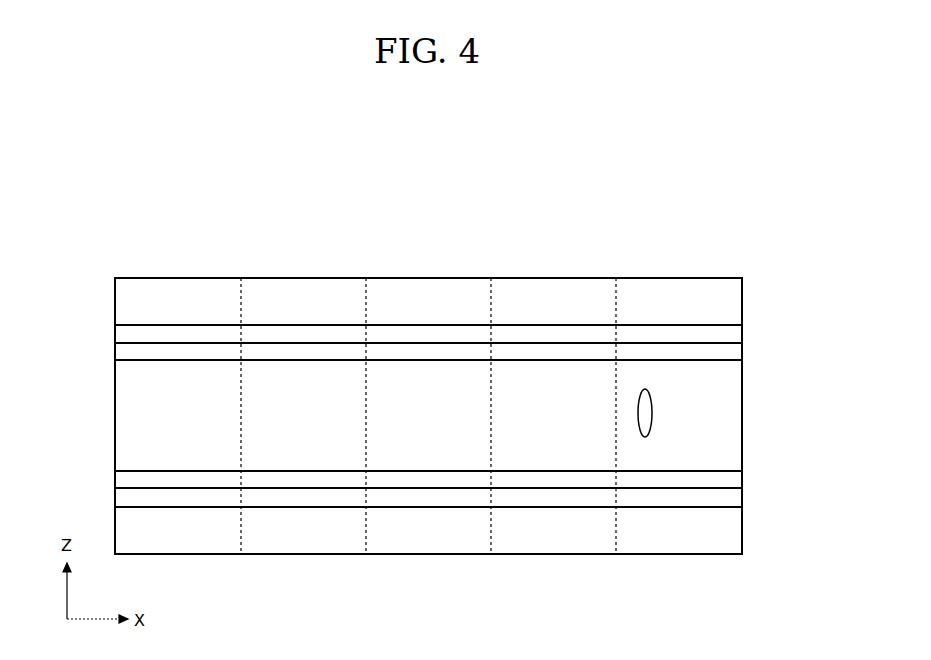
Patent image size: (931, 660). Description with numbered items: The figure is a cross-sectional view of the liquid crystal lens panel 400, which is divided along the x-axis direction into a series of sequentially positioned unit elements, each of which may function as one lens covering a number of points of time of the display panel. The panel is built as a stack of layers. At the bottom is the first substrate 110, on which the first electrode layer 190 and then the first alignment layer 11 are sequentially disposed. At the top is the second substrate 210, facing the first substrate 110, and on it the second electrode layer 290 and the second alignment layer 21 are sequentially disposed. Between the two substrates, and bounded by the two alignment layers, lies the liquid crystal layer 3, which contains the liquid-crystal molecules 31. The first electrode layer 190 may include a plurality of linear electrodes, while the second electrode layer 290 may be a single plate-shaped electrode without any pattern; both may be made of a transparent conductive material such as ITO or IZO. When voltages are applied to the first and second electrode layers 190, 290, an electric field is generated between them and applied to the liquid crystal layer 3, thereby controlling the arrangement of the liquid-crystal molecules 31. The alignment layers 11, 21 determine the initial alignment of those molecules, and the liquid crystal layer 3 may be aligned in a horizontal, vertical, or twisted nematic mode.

The liquid crystal lens panel 400 is at (410, 192).
The second substrate 210 is at (736, 302).
The second electrode layer 290 is at (736, 336).
The second alignment layer 21 is at (733, 353).
The liquid crystal layer 3 is at (731, 406).
The liquid-crystal molecules 31 is at (648, 436).
The first alignment layer 11 is at (735, 481).
The first electrode layer 190 is at (736, 497).
The first substrate 110 is at (736, 533).